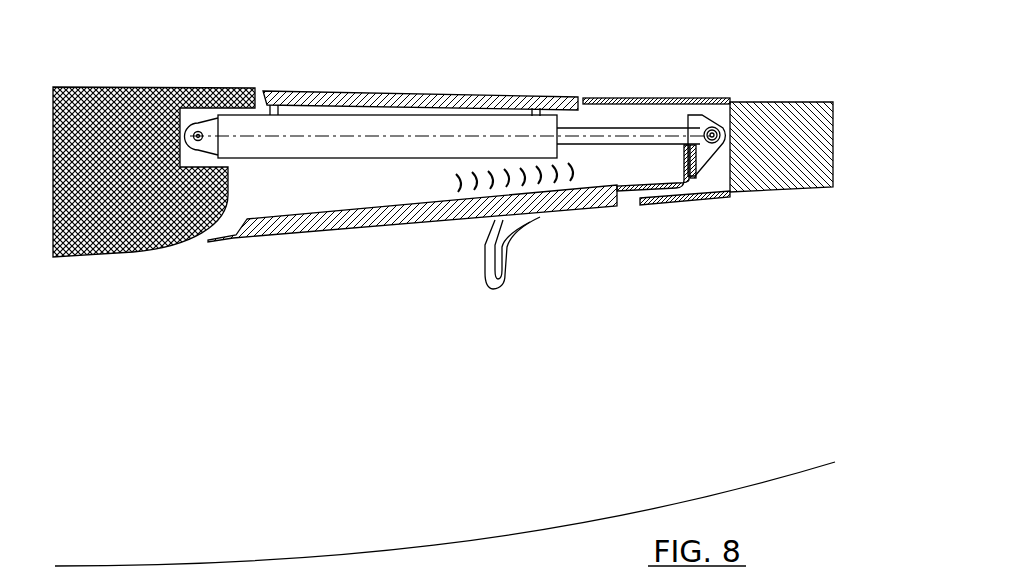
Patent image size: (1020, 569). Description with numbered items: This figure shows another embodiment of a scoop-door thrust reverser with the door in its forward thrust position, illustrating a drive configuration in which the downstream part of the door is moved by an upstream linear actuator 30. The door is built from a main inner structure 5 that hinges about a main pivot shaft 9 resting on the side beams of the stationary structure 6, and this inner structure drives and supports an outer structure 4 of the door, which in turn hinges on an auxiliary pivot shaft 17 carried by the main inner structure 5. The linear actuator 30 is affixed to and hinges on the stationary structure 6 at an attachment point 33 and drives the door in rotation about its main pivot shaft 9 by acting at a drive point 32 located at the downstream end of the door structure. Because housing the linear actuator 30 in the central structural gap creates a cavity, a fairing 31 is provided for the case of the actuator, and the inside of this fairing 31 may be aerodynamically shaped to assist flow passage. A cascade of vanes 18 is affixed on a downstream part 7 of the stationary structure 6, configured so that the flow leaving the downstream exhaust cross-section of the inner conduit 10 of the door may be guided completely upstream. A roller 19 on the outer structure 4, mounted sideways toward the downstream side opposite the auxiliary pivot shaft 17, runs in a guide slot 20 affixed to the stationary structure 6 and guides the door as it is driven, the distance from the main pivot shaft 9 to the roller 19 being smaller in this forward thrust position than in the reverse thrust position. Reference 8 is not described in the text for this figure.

The outer structure 4 is at (338, 99).
The main inner structure 5 is at (367, 225).
The stationary structure 6 is at (118, 62).
The downstream part 7 is at (747, 130).
The front fixed block 8 is at (140, 205).
The main pivot shaft 9 is at (650, 290).
The inner conduit 10 is at (372, 181).
The auxiliary pivot shaft 17 is at (279, 205).
The cascade of vanes 18 is at (465, 187).
The roller 19 is at (542, 215).
The guide slot 20 is at (493, 290).
The linear actuator 30 is at (463, 130).
The fairing 31 is at (552, 102).
The drive point 32 is at (712, 143).
The attachment point 33 is at (200, 132).